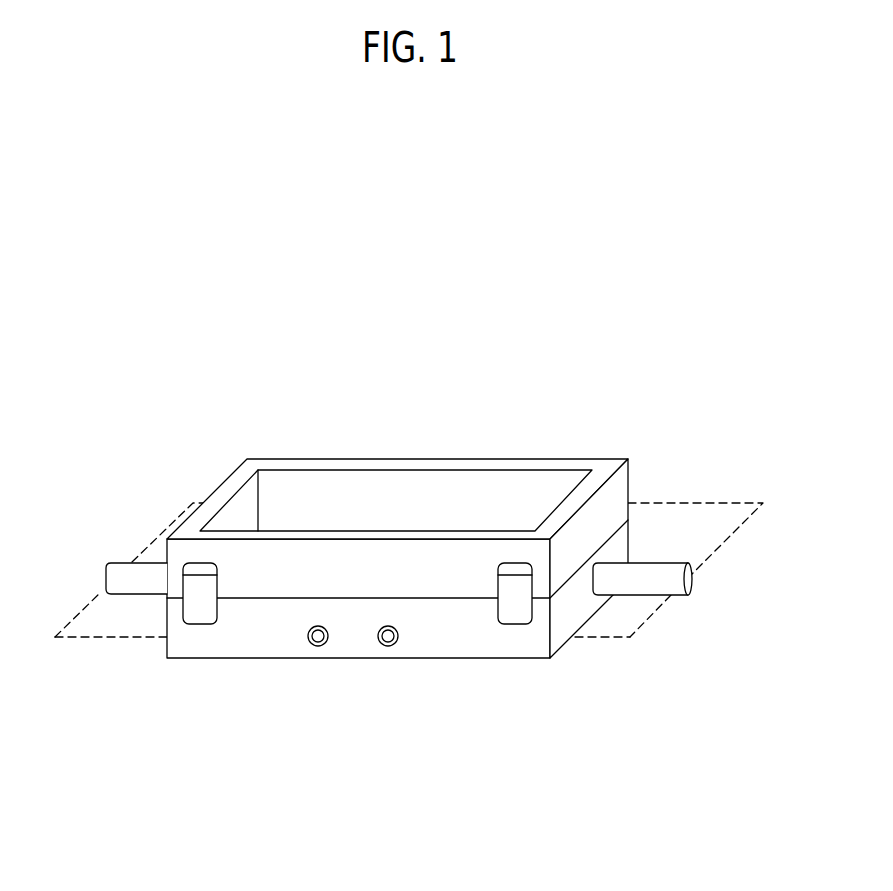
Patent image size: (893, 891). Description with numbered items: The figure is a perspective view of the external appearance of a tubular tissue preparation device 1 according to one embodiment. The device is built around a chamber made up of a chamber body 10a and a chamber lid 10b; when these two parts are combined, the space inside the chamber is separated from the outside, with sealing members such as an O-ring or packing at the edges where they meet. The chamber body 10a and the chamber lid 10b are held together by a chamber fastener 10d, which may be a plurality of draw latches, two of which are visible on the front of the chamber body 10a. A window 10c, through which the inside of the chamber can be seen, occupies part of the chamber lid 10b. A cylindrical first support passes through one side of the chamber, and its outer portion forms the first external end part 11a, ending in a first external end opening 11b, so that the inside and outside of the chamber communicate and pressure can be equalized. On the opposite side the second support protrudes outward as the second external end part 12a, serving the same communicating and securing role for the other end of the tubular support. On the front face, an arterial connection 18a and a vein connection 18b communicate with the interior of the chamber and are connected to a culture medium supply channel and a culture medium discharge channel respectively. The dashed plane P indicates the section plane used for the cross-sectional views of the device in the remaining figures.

The tubular tissue preparation device 1 is at (436, 489).
The chamber body 10a is at (455, 647).
The chamber lid 10b is at (289, 463).
The window 10c is at (447, 497).
The chamber fastener 10d is at (195, 613).
The first external end part of the first support 11a is at (682, 545).
The first external end opening 11b is at (695, 579).
The second external end part of the second support 12a is at (119, 568).
The arterial connection 18a is at (313, 647).
The vein connection 18b is at (381, 647).
The plane P is at (83, 640).